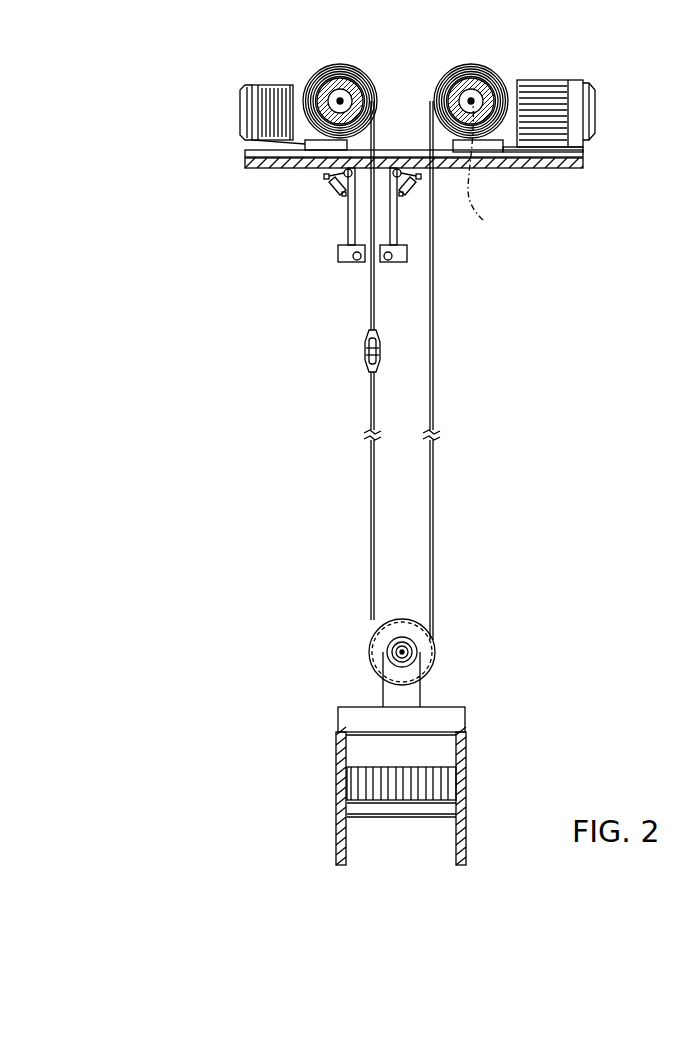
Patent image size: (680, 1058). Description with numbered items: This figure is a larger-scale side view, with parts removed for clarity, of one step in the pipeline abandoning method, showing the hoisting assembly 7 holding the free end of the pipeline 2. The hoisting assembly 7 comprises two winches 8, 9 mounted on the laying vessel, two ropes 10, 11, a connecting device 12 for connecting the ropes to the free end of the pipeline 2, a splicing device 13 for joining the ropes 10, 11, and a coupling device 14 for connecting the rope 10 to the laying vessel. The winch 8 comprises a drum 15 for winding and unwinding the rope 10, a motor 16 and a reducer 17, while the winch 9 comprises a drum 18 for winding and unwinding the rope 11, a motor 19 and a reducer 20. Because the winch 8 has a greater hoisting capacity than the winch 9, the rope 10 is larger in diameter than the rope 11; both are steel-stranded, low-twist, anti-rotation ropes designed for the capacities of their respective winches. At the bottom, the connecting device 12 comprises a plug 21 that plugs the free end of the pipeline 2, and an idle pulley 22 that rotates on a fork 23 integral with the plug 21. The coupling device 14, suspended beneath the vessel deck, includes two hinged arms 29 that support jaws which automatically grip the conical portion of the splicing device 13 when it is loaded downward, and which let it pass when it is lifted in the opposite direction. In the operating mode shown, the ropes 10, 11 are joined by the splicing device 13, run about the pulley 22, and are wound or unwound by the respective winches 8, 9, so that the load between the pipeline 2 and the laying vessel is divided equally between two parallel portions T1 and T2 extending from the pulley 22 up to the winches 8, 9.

The pipeline 2 is at (463, 828).
The hoisting assembly 7 is at (213, 103).
The winch 8 is at (580, 112).
The winch 9 is at (244, 121).
The rope 10 is at (391, 370).
The rope 11 is at (370, 310).
The connecting device 12 is at (415, 727).
The splicing device 13 is at (343, 357).
The coupling device 14 is at (332, 221).
The drum 15 is at (488, 169).
The motor 16 is at (578, 110).
The reducer 17 is at (497, 148).
The drum 18 is at (342, 101).
The motor 19 is at (315, 146).
The reducer 20 is at (250, 127).
The plug 21 is at (443, 748).
The pulley 22 is at (388, 638).
The fork 23 is at (400, 692).
The arms 29 is at (580, 166).
The parallel portion T1 is at (452, 392).
The parallel portion T2 is at (352, 407).